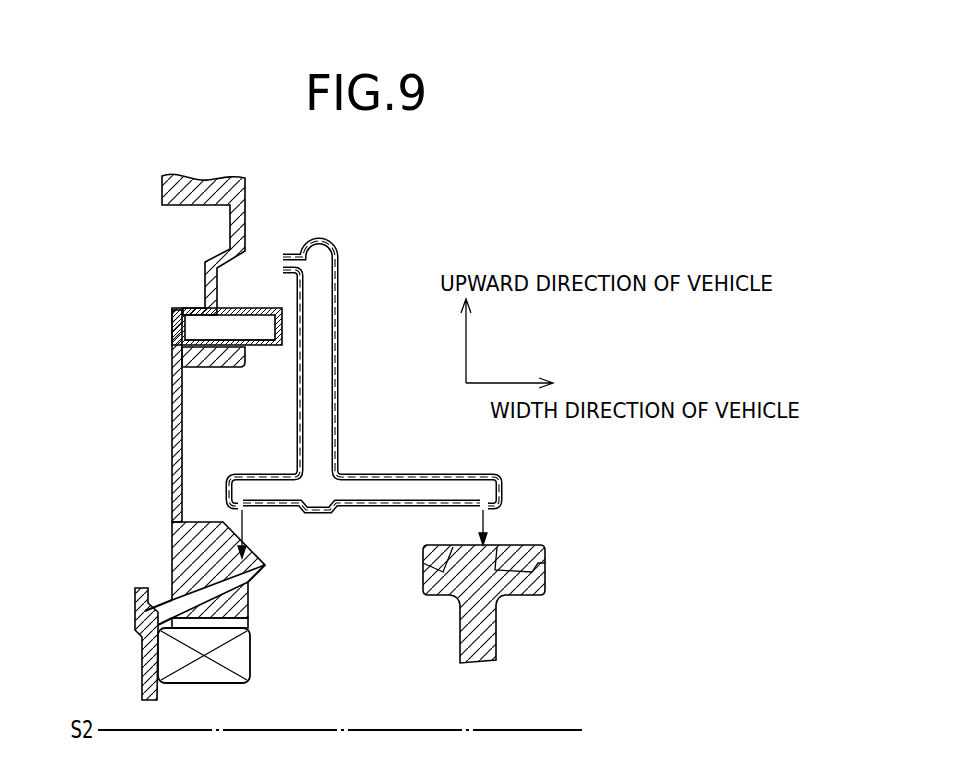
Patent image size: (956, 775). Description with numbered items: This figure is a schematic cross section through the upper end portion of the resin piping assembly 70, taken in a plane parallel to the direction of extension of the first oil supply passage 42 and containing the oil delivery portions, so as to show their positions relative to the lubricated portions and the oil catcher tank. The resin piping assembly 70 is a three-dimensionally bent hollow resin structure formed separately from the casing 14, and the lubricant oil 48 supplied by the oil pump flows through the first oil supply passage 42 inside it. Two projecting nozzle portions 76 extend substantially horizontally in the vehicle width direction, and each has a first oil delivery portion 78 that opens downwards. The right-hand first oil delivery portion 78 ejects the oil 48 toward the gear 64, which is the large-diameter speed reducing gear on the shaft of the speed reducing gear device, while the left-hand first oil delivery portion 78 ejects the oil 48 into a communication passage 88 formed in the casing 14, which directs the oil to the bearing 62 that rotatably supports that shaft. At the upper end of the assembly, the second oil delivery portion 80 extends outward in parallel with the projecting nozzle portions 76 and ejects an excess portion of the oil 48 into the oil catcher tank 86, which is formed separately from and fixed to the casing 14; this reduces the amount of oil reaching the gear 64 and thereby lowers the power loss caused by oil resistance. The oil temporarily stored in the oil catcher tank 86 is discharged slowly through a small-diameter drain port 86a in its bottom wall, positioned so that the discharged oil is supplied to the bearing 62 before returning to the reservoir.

The casing 14 is at (173, 397).
The first oil supply passage 42 is at (364, 358).
The lubricant oil 48 is at (241, 297).
The bearing 62 is at (236, 660).
The gear 64 is at (523, 583).
The resin piping assembly 70 is at (384, 375).
The projecting nozzle portions 76 is at (250, 472).
The first oil delivery portion 78 is at (248, 506).
The second oil delivery portion 80 is at (249, 284).
The oil catcher tank 86 is at (211, 343).
The drain port 86a is at (258, 347).
The communication passage 88 is at (190, 582).